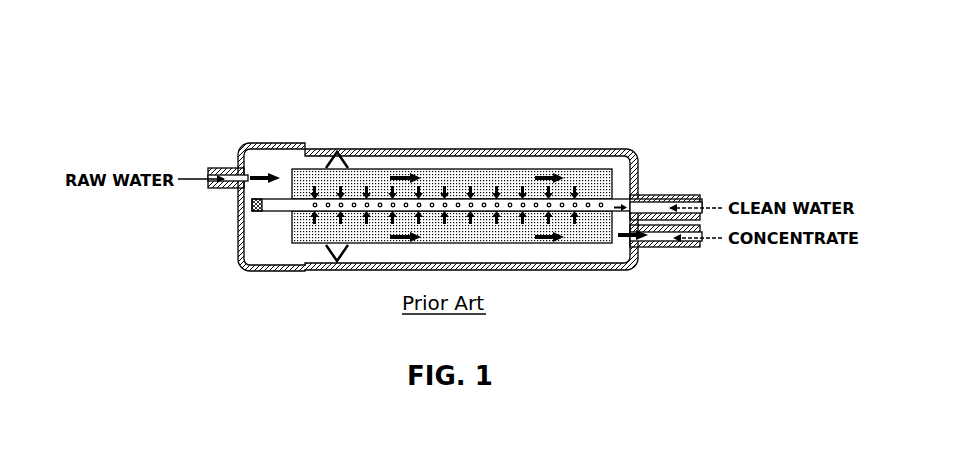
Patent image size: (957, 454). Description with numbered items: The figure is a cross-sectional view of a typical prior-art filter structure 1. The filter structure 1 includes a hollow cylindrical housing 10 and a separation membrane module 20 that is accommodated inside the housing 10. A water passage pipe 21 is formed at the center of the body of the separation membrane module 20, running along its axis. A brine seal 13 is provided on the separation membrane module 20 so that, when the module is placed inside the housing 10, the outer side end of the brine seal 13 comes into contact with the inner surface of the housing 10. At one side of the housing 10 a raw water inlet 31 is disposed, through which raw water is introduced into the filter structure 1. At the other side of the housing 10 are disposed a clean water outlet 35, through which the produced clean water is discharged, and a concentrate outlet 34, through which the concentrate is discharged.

The filter structure 1 is at (490, 82).
The housing 10 is at (413, 149).
The brine seal 13 is at (337, 151).
The separation membrane module 20 is at (523, 168).
The water passage pipe 21 is at (614, 198).
The raw water inlet 31 is at (223, 167).
The concentrate outlet 34 is at (680, 248).
The clean water outlet 35 is at (683, 195).